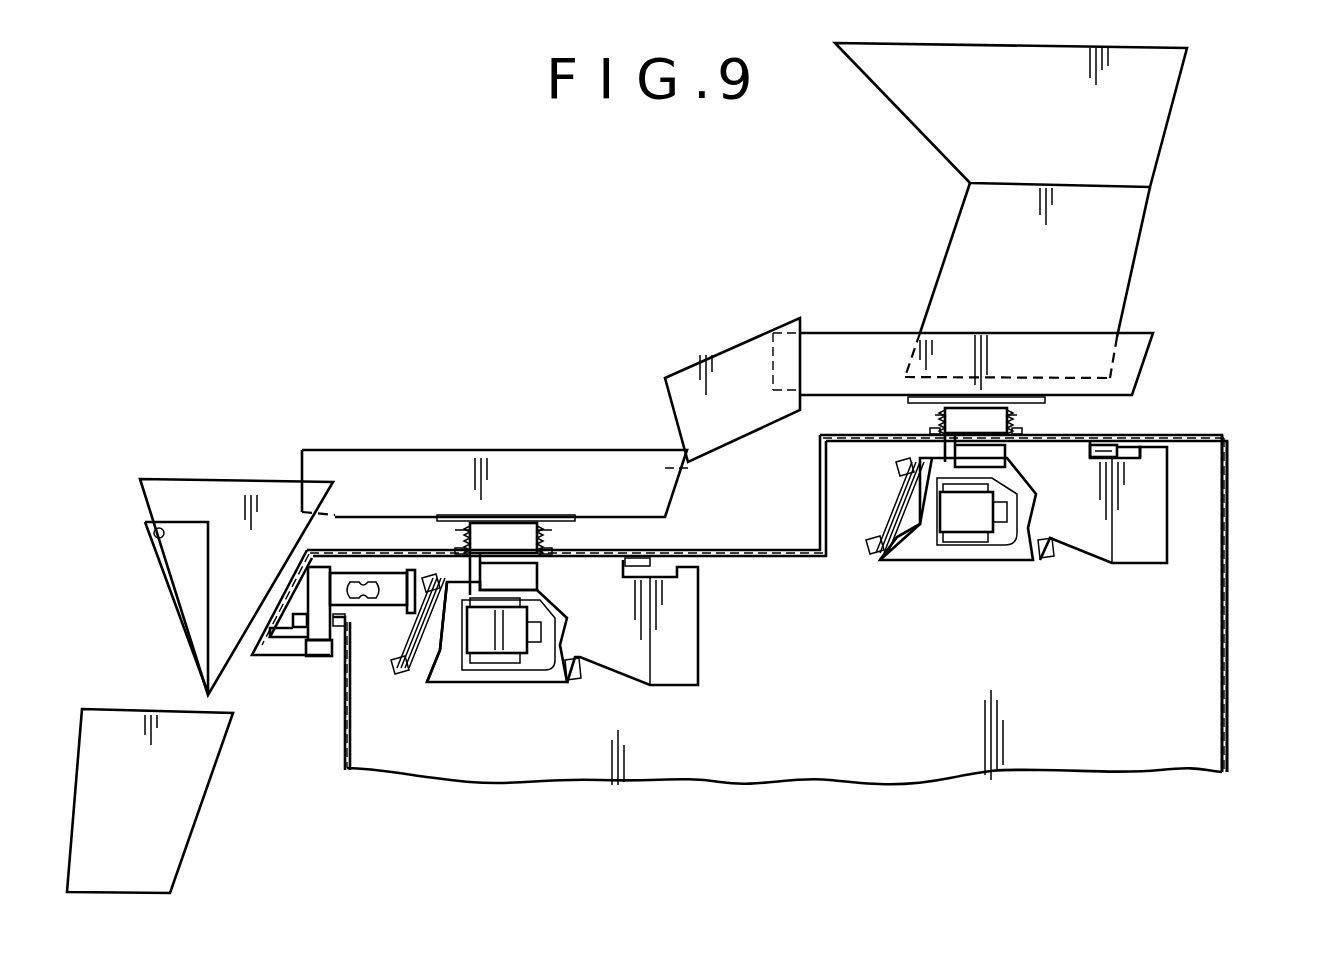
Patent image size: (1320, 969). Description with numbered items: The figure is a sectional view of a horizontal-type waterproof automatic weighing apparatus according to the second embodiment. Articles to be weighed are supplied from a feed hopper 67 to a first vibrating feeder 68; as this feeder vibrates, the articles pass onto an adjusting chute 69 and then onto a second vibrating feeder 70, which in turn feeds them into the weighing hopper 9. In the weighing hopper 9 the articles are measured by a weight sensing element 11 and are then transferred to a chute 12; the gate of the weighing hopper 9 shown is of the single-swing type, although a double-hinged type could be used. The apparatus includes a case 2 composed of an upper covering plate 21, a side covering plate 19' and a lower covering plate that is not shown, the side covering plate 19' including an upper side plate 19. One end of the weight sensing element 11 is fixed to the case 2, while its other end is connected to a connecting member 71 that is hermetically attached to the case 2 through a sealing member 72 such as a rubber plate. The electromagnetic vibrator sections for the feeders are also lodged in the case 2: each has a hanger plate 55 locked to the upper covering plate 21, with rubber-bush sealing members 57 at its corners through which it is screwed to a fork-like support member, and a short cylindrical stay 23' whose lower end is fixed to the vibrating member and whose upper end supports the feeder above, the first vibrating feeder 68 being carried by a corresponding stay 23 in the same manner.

The case 2 is at (1243, 519).
The weighing hopper 9 is at (235, 495).
The weight sensing element 11 is at (392, 597).
The chute 12 is at (188, 813).
The upper side plate 19 is at (821, 610).
The side covering plate 19' is at (301, 660).
The upper covering plate 21 is at (743, 555).
The mounting block 23 is at (935, 428).
The short cylindrical stay 23' is at (516, 496).
The hanger plate 55 is at (1080, 435).
The sealing member 57 is at (1115, 452).
The feed hopper 67 is at (1155, 141).
The first vibrating feeder 68 is at (1148, 333).
The adjusting chute 69 is at (700, 380).
The second vibrating feeder 70 is at (438, 457).
The connecting member 71 is at (323, 633).
The sealing member 72 is at (295, 632).